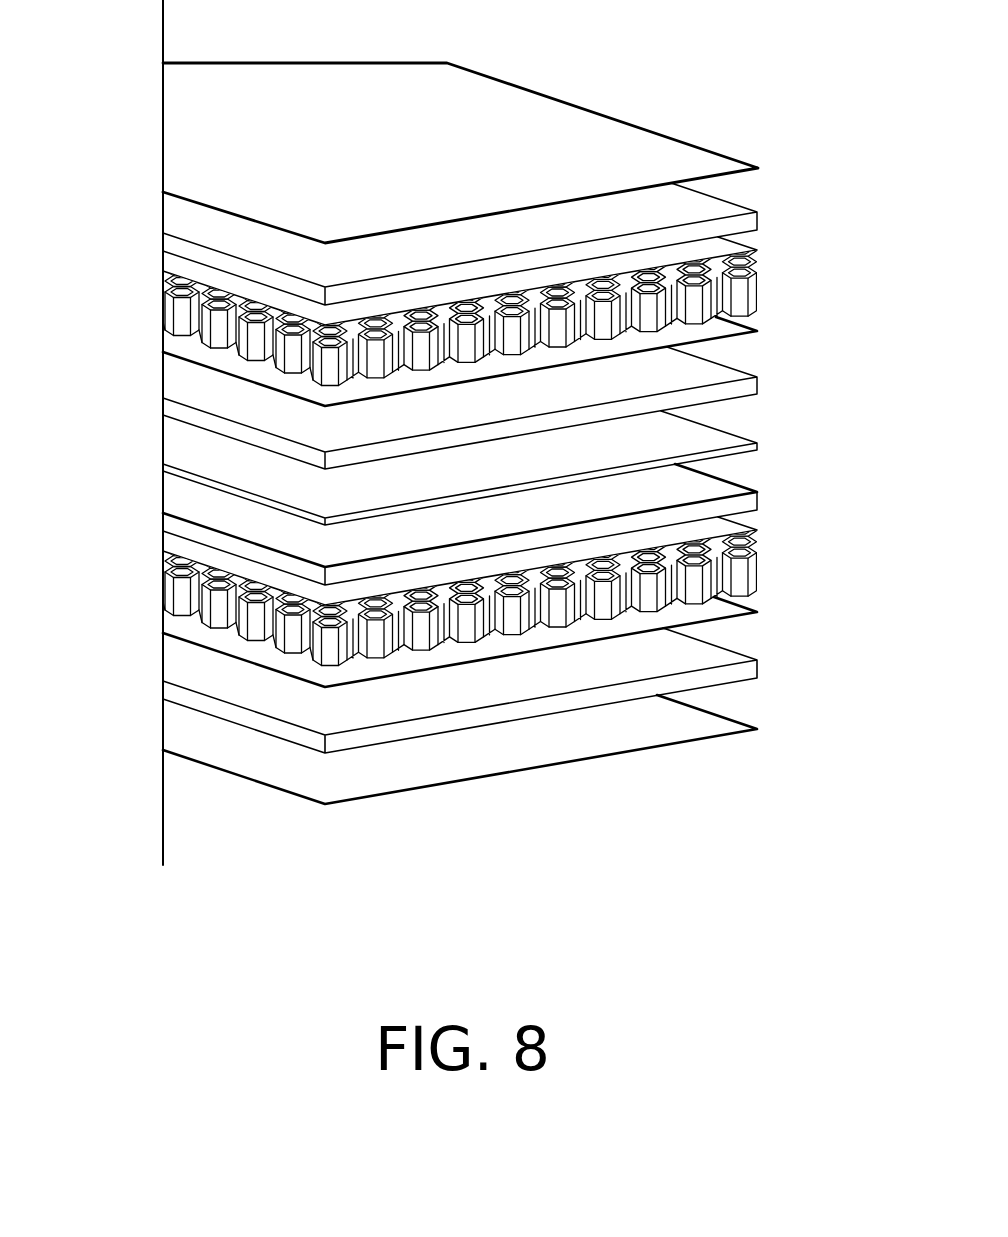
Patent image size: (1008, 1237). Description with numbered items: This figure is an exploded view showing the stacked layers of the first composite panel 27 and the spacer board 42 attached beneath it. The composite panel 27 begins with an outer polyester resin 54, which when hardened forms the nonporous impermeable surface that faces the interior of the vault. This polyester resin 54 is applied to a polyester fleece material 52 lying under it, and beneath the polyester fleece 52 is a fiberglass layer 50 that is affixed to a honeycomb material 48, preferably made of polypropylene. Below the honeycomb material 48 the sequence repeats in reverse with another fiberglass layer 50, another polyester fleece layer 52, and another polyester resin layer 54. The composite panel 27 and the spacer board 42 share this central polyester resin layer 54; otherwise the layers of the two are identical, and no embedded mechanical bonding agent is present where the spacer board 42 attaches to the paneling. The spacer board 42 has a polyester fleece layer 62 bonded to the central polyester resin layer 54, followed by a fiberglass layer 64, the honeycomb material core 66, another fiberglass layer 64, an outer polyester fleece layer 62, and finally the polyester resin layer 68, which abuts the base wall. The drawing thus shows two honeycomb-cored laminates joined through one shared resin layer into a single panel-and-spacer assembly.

The composite panel 27 is at (123, 165).
The spacer board 42 is at (123, 475).
The honeycomb material 48 is at (758, 290).
The fiberglass layer 50 is at (757, 250).
The polyester fleece material 52 is at (757, 212).
The polyester resin 54 is at (758, 168).
The polyester fleece layer 62 is at (757, 497).
The fiberglass layer 64 is at (757, 532).
The honeycomb material core 66 is at (758, 578).
The polyester resin layer 68 is at (757, 730).